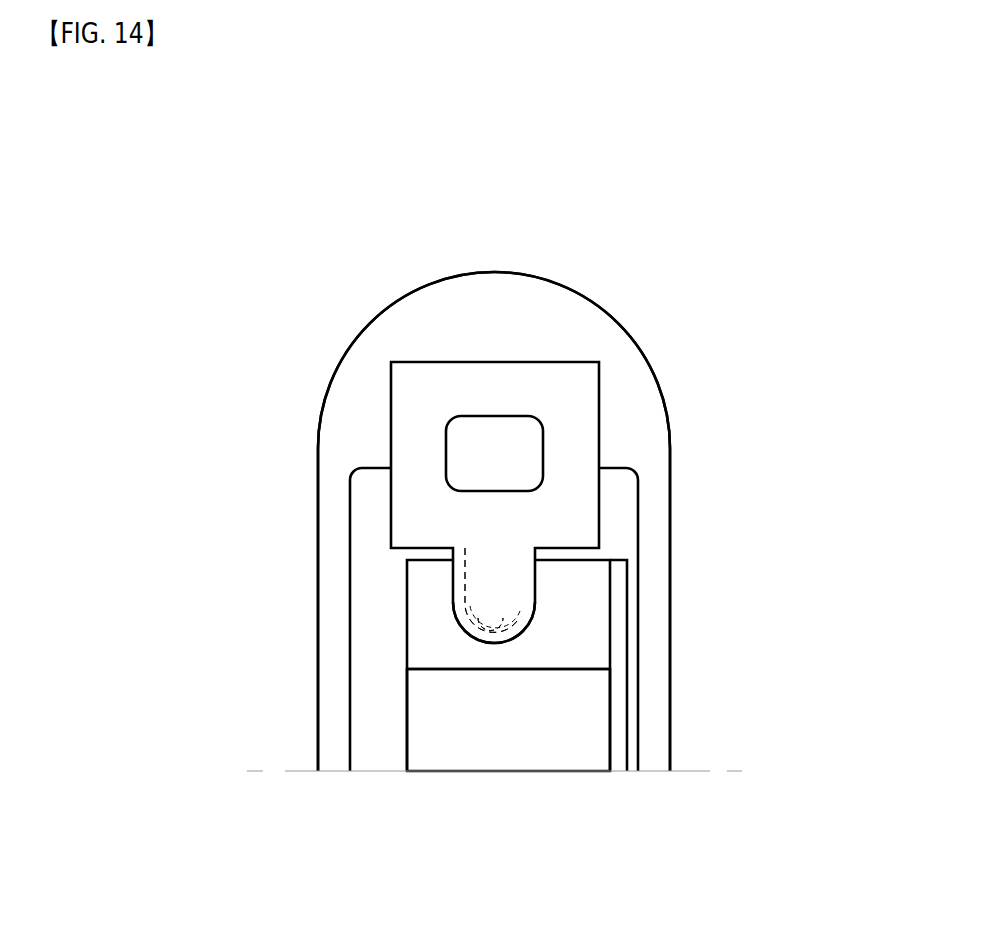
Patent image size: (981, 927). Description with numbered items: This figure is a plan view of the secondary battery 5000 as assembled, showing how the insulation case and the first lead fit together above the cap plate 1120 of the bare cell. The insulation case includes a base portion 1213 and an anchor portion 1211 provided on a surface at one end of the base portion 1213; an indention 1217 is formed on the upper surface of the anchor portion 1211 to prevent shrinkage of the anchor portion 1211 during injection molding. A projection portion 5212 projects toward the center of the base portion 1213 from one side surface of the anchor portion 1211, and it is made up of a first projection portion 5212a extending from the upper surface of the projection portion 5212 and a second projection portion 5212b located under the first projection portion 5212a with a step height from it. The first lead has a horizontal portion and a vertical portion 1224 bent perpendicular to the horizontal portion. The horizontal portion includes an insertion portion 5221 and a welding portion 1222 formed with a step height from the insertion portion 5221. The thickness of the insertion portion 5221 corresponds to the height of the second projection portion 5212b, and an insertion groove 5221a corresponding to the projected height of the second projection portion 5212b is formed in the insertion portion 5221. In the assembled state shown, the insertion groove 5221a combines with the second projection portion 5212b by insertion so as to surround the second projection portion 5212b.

The secondary battery 5000 is at (785, 183).
The cap plate 1120 is at (633, 409).
The anchor portion 1211 is at (534, 362).
The indention 1217 is at (485, 436).
The base portion 1213 is at (623, 517).
The insertion portion 5221 is at (592, 634).
The insertion groove 5221a is at (497, 645).
The vertical portion 1224 is at (622, 714).
The welding portion 1222 is at (580, 746).
The projection portion 5212 is at (157, 557).
The first projection portion 5212a is at (452, 577).
The second projection portion 5212b is at (450, 606).